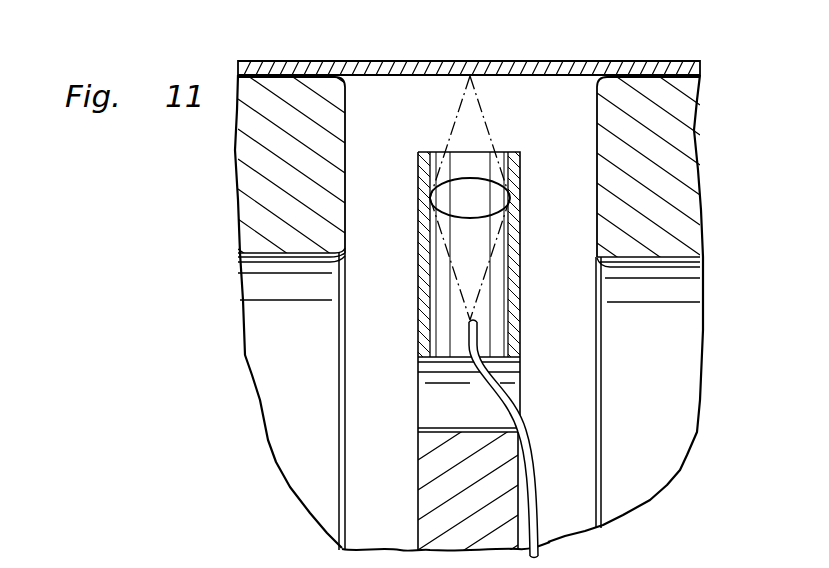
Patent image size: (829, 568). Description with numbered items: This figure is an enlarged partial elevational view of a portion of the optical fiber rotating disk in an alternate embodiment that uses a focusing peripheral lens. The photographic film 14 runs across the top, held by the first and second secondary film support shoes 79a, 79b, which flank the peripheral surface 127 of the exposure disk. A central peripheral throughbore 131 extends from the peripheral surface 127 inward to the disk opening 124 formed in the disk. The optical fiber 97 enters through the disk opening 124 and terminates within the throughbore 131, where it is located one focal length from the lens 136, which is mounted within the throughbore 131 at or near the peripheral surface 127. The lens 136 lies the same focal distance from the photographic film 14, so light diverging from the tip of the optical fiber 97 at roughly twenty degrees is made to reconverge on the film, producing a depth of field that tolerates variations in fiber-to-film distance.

The photographic film 14 is at (548, 68).
The first secondary film support shoe 79a is at (253, 186).
The second secondary film support shoe 79b is at (682, 160).
The peripheral surface 127 is at (421, 150).
The lens 136 is at (452, 198).
The central peripheral throughbore 131 is at (437, 300).
The disk opening 124 is at (442, 430).
The optical fiber 97 is at (541, 528).